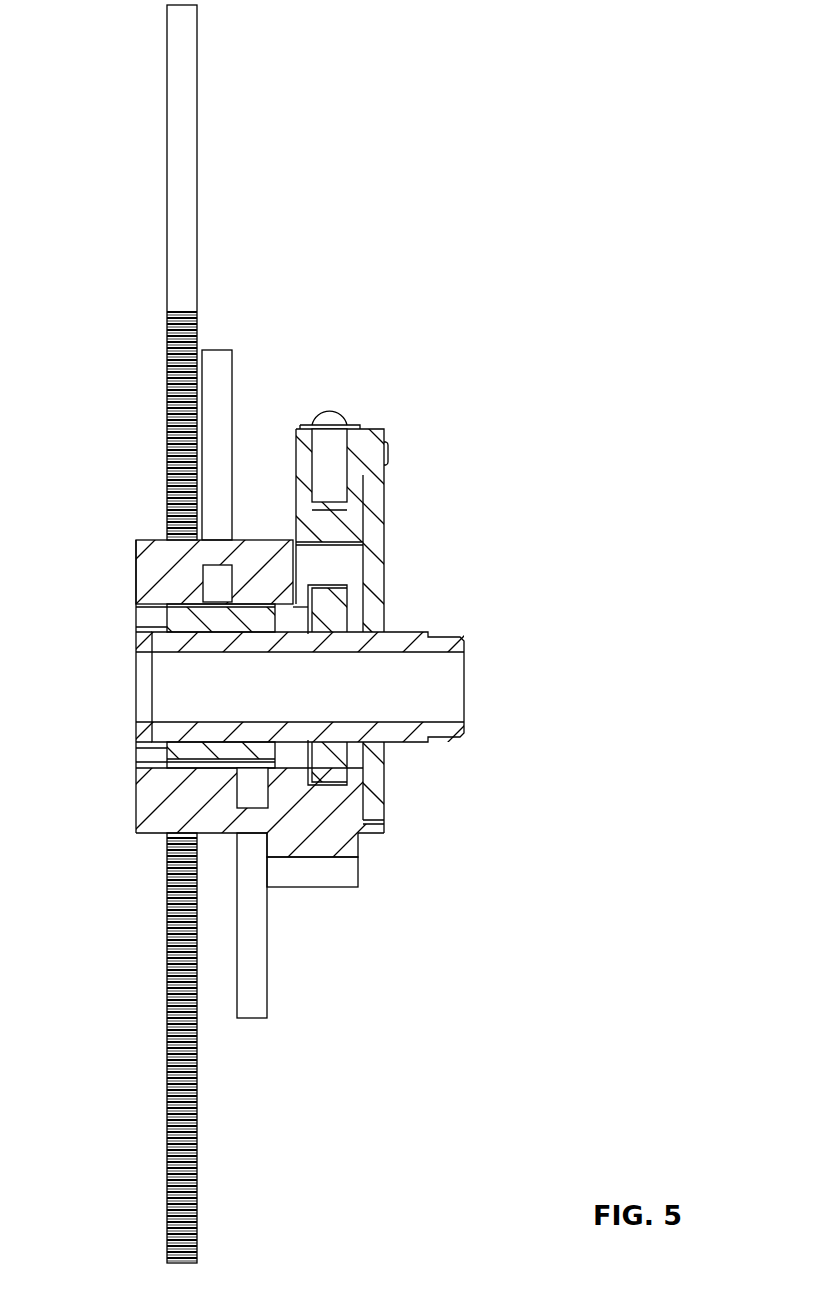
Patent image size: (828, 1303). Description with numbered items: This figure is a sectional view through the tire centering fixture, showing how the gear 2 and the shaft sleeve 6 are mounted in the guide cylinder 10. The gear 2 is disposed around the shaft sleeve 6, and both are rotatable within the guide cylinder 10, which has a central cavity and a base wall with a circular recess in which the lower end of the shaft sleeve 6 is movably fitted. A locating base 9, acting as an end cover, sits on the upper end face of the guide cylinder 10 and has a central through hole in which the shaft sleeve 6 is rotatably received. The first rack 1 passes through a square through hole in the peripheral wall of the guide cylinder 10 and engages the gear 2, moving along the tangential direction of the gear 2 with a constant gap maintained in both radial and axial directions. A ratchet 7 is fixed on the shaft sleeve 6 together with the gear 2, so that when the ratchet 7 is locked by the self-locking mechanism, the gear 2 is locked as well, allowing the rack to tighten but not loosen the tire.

The first rack 1 is at (185, 1027).
The gear 2 is at (187, 620).
The shaft sleeve 6 is at (447, 732).
The ratchet 7 is at (340, 610).
The locating base 9 is at (368, 502).
The guide cylinder 10 is at (158, 803).